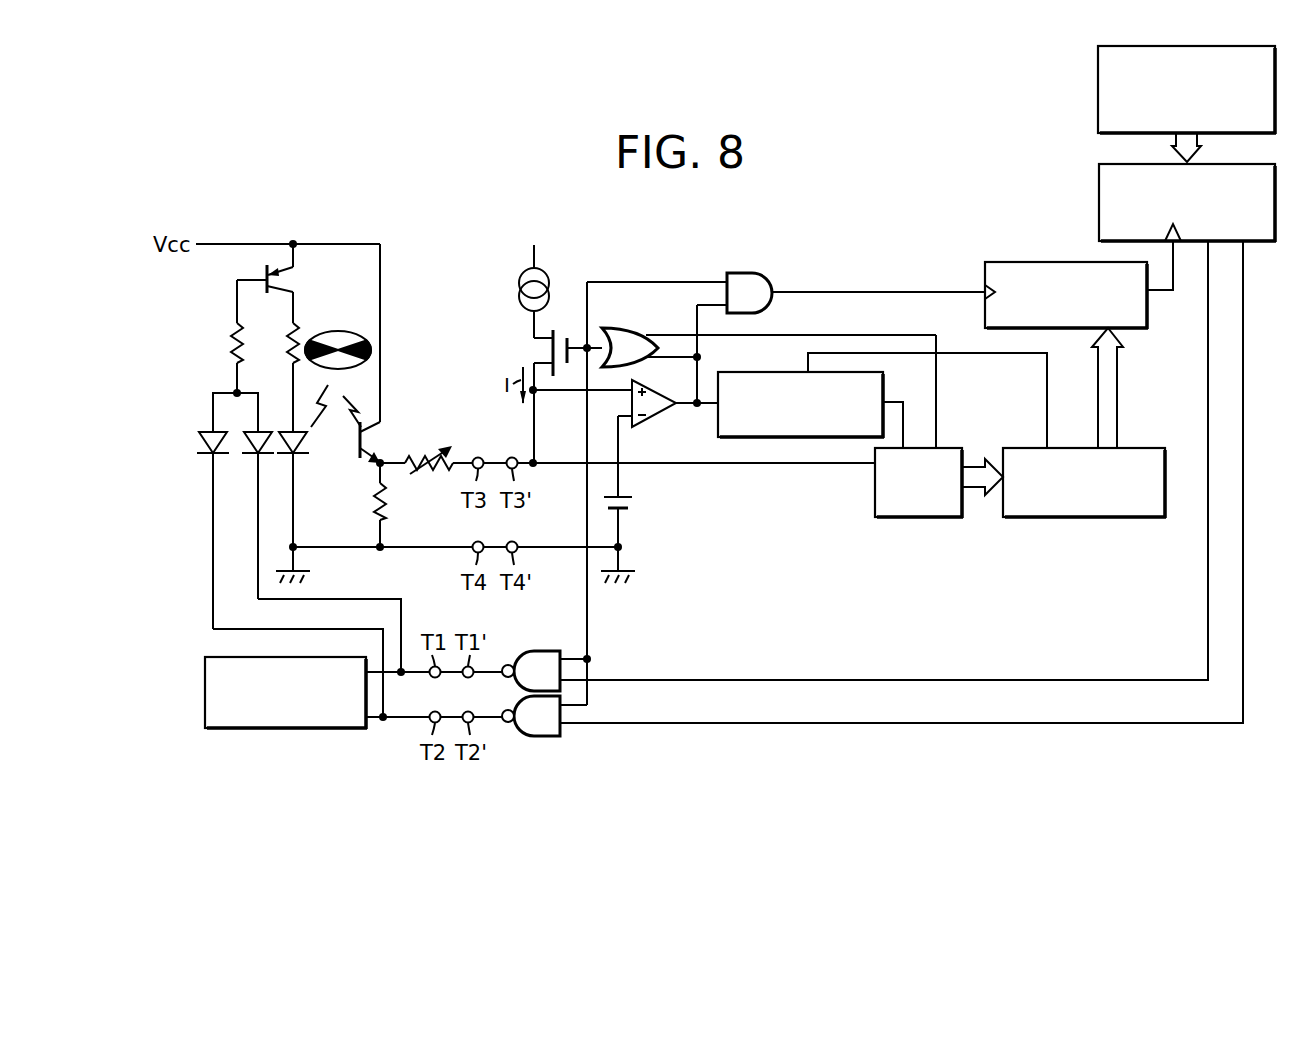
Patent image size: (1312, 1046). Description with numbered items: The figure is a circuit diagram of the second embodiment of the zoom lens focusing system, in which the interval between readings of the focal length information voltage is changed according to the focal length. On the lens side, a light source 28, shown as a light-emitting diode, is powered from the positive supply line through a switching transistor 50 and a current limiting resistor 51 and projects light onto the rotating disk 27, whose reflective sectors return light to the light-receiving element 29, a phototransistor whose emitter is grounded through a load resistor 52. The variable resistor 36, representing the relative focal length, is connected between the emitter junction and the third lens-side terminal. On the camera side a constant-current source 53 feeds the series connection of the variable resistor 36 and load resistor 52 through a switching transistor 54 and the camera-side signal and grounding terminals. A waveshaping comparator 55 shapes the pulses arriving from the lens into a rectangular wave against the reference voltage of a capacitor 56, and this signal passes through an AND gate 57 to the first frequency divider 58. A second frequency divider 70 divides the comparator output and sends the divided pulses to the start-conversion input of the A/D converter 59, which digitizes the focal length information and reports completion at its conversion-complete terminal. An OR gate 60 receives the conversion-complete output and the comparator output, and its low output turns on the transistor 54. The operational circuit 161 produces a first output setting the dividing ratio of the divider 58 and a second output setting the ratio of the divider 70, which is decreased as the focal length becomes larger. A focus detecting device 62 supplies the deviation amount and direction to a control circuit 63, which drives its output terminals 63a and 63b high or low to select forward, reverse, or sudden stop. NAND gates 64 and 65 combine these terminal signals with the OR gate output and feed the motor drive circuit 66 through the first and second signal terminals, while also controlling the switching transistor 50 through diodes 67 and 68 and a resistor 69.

The rotating disk 27 is at (339, 331).
The light source 28 is at (287, 439).
The light-receiving element 29 is at (358, 438).
The variable resistor 36 is at (421, 454).
The switching transistor 50 is at (285, 284).
The current limiting resistor 51 is at (288, 348).
The load resistor 52 is at (400, 500).
The constant-current source 53 is at (519, 285).
The switching transistor 54 is at (545, 352).
The waveshaping comparator 55 is at (663, 414).
The capacitor 56 is at (632, 504).
The AND gate 57 is at (748, 272).
The frequency divider 58 is at (1060, 262).
The A/D converter 59 is at (908, 518).
The OR gate 60 is at (626, 331).
The focus detecting device 62 is at (1097, 93).
The control circuit 63 is at (1098, 185).
The output terminal 63a is at (1207, 243).
The output terminal 63b is at (1243, 243).
The NAND gate 64 is at (525, 651).
The NAND gate 65 is at (514, 736).
The motor drive circuit 66 is at (318, 729).
The diode 67 is at (254, 436).
The diode 68 is at (205, 435).
The resistor 69 is at (230, 348).
The second frequency divider 70 is at (790, 438).
The operational circuit 161 is at (1048, 518).